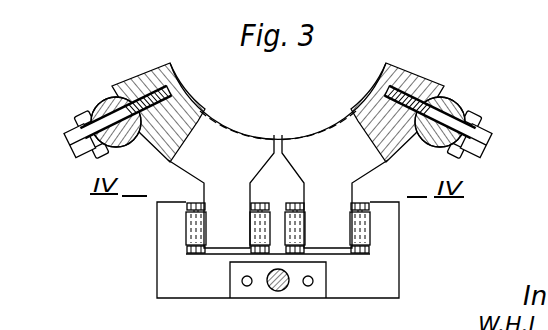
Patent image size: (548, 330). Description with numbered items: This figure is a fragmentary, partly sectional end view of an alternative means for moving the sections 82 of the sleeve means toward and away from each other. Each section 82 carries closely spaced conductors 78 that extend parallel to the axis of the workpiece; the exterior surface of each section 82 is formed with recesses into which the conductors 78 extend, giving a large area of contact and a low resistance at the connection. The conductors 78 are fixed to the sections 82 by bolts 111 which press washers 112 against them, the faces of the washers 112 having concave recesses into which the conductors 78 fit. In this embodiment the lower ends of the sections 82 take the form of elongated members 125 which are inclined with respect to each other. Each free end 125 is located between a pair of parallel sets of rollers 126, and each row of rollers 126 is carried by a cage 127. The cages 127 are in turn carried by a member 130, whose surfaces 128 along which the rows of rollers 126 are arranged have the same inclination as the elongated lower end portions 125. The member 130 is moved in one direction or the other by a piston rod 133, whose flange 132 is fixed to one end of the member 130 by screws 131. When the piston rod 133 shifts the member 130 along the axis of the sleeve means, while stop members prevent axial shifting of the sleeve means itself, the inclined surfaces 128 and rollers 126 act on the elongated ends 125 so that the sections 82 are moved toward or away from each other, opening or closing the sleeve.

The conductor 78 is at (104, 106).
The section 82 is at (147, 78).
The bolt 111 is at (90, 149).
The washer 112 is at (83, 116).
The elongated member 125 is at (218, 243).
The roller 126 is at (193, 228).
The cage 127 is at (194, 203).
The surface 128 is at (289, 228).
The member 130 is at (374, 289).
The screw 131 is at (307, 287).
The flange 132 is at (247, 287).
The piston rod 133 is at (279, 292).